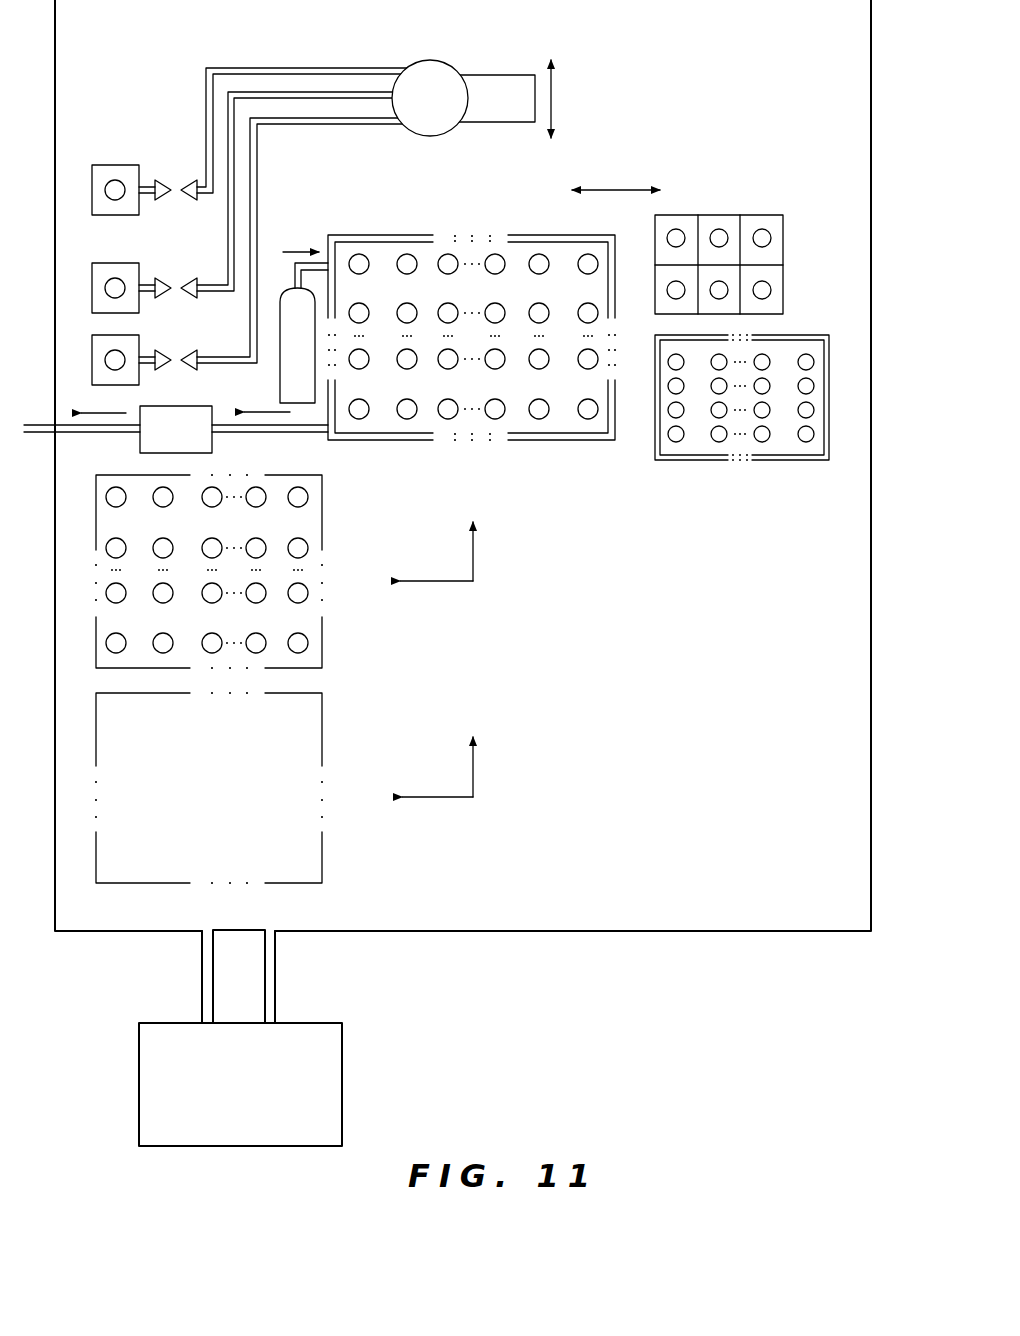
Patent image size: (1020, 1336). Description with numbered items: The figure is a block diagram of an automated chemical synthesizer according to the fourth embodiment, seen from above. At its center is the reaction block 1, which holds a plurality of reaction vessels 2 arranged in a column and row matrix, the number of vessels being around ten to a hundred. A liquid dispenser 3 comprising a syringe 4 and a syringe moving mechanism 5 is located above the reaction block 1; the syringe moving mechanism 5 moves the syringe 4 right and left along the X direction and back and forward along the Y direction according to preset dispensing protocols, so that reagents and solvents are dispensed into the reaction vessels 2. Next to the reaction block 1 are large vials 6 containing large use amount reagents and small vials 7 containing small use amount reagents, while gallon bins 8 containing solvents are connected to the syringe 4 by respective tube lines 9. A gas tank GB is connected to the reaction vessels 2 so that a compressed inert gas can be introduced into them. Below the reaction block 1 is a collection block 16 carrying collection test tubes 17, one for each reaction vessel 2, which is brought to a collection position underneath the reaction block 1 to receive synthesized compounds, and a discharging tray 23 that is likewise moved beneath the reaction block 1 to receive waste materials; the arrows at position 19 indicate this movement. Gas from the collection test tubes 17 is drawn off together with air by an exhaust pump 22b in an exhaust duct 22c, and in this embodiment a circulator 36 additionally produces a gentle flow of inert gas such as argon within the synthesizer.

The reaction block 1 is at (588, 420).
The reaction vessels 2 is at (538, 254).
The liquid dispenser 3 is at (474, 148).
The syringe 4 is at (428, 136).
The syringe moving mechanism 5 is at (505, 75).
The large vials 6 is at (718, 236).
The small vials 7 is at (676, 442).
The gallon bins 8 is at (139, 208).
The tube lines 9 is at (206, 122).
The collection block 16 is at (322, 645).
The collection test tubes 17 is at (308, 498).
The tray position 19 is at (524, 450).
The exhaust pump 22b is at (140, 449).
The exhaust duct 22c is at (230, 433).
The discharging tray 23 is at (322, 716).
The circulator 36 is at (342, 1083).
The gas tank GB is at (282, 386).
The X direction X is at (620, 190).
The Y direction Y is at (552, 100).